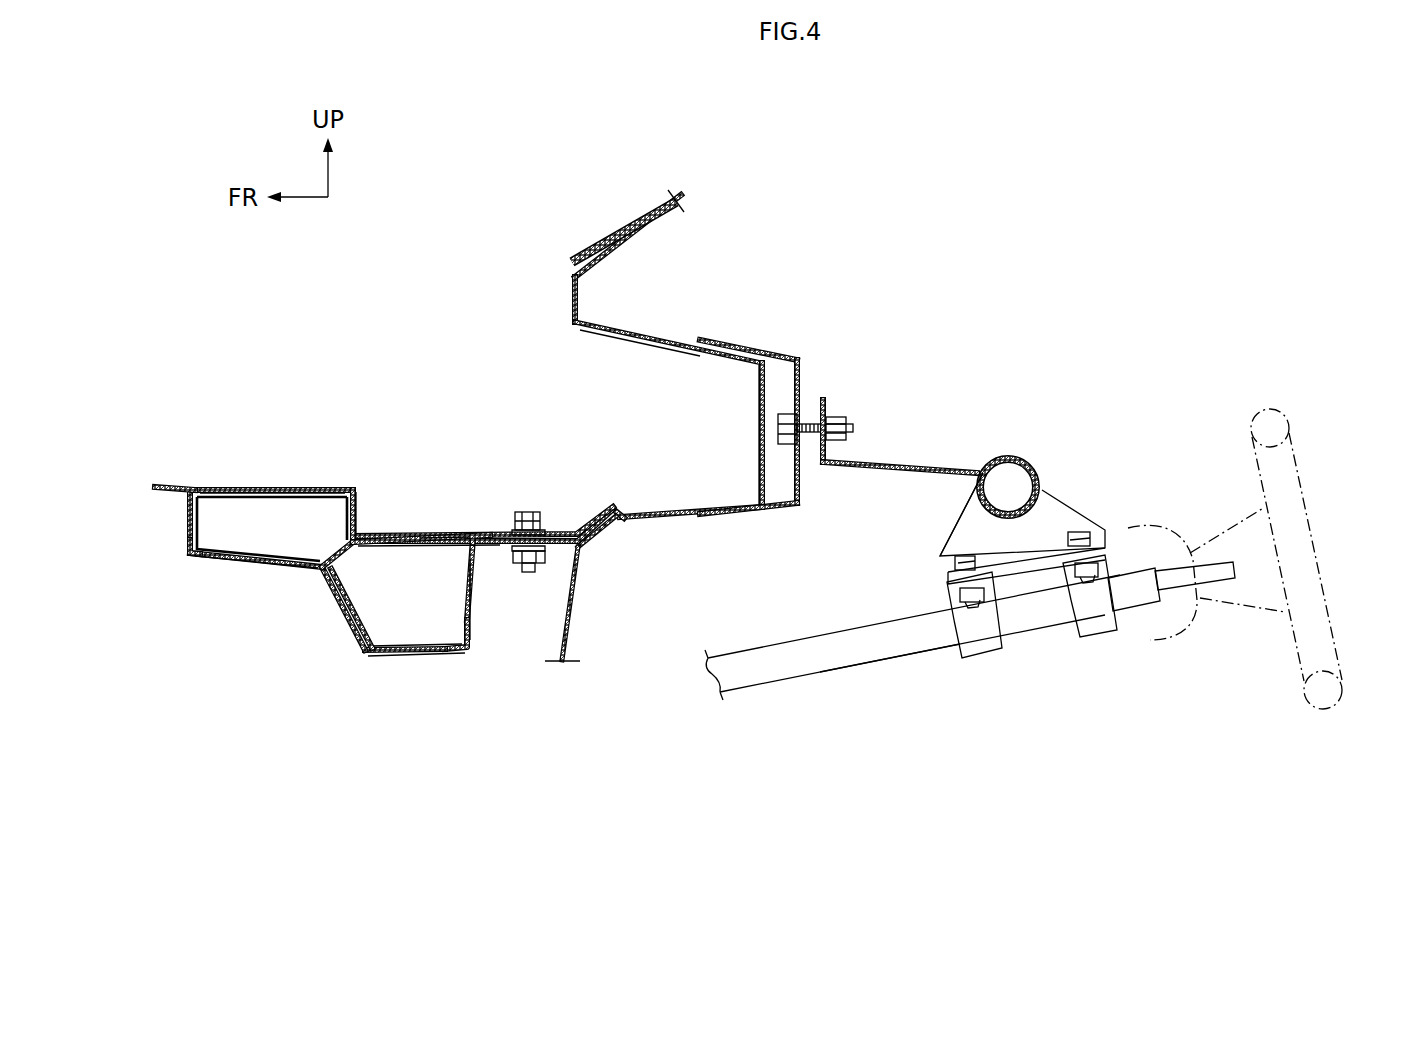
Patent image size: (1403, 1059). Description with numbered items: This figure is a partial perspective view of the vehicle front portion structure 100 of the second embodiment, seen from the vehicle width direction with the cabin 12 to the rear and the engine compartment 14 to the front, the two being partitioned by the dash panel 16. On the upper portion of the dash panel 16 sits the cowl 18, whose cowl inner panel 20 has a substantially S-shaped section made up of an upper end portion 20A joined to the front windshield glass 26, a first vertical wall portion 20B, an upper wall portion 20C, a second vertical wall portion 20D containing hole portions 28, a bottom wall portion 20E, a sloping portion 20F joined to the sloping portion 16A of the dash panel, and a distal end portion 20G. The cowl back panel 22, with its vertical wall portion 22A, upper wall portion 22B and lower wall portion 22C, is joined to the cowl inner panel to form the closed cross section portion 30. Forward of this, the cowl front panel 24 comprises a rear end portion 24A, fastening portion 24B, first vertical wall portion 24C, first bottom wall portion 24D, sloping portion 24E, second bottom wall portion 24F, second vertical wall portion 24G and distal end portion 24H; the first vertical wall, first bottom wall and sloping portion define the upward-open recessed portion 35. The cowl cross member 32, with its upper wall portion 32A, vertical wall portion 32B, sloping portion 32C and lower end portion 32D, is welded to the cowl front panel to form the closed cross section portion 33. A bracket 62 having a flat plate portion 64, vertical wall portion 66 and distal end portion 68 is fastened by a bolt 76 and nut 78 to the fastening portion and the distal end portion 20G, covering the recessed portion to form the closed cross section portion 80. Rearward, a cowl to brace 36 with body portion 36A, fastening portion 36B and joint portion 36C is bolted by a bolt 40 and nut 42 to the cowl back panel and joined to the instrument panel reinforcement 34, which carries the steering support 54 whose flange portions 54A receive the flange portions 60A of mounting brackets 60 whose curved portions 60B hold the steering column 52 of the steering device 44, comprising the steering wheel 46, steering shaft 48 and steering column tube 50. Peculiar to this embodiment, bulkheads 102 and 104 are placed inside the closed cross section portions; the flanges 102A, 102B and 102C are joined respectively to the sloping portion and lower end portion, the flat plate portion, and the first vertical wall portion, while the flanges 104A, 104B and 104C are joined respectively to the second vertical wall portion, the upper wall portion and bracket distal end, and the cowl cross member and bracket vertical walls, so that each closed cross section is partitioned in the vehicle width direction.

The vehicle front portion structure 100 is at (808, 196).
The cabin 12 is at (945, 320).
The engine compartment 14 is at (303, 700).
The dash panel 16 is at (596, 591).
The sloping portion 16A is at (600, 548).
The cowl 18 is at (588, 422).
The cowl inner panel 20 is at (558, 412).
The upper end portion 20A is at (626, 258).
The first vertical wall portion 20B is at (570, 290).
The upper wall portion 20C is at (640, 348).
The second vertical wall portion 20D is at (755, 393).
The bottom wall portion 20E is at (690, 517).
The sloping portion 20F is at (622, 530).
The distal end portion 20G is at (547, 548).
The cowl back panel 22 is at (792, 437).
The vertical wall portion 22A is at (805, 380).
The upper wall portion 22B is at (772, 345).
The lower wall portion 22C is at (770, 515).
The cowl front panel 24 is at (374, 594).
The rear end portion 24A is at (600, 512).
The fastening portion 24B is at (478, 560).
The first vertical wall portion 24C is at (480, 650).
The first bottom wall portion 24D is at (445, 657).
The sloping portion 24E is at (333, 618).
The second bottom wall portion 24F is at (236, 575).
The second vertical wall portion 24G is at (196, 562).
The distal end portion 24H is at (186, 556).
The front windshield glass 26 is at (615, 225).
The hole portions 28 is at (758, 455).
The closed cross section portion 30 is at (758, 430).
The cowl cross member 32 is at (327, 475).
The upper wall portion 32A is at (207, 485).
The vertical wall portion 32B is at (350, 486).
The sloping portion 32C is at (340, 543).
The lower end portion 32D is at (372, 575).
The closed cross section portion 33 is at (258, 576).
The instrument panel reinforcement 34 is at (1012, 466).
The recessed portion 35 is at (418, 636).
The cowl to brace 36 is at (914, 468).
The body portion 36A is at (892, 478).
The fastening portion 36B is at (822, 465).
The joint portion 36C is at (1000, 458).
The bolt 40 is at (776, 430).
The nut 42 is at (848, 428).
The steering device 44 is at (1196, 534).
The steering wheel 46 is at (1305, 448).
The steering shaft 48 is at (1192, 545).
The steering column tube 50 is at (912, 657).
The steering column 52 is at (895, 668).
The steering support 54 is at (1011, 527).
The flange portions 54A is at (962, 540).
The mounting bracket 60 is at (1055, 641).
The flange portions 60A is at (1005, 608).
The curved portion 60B is at (978, 660).
The bracket 62 is at (505, 557).
The flat plate portion 64 is at (446, 537).
The vertical wall portion 66 is at (360, 520).
The distal end portion 68 is at (357, 505).
The bolt 76 is at (527, 510).
The nut 78 is at (526, 575).
The closed cross section portion 80 is at (406, 652).
The bulkhead 102 is at (383, 594).
The flange 102A is at (375, 670).
The flange 102B is at (333, 582).
The flange 102C is at (470, 540).
The bulkhead 104 is at (238, 536).
The flange 104A is at (176, 484).
The flange 104B is at (266, 492).
The flange 104C is at (300, 490).